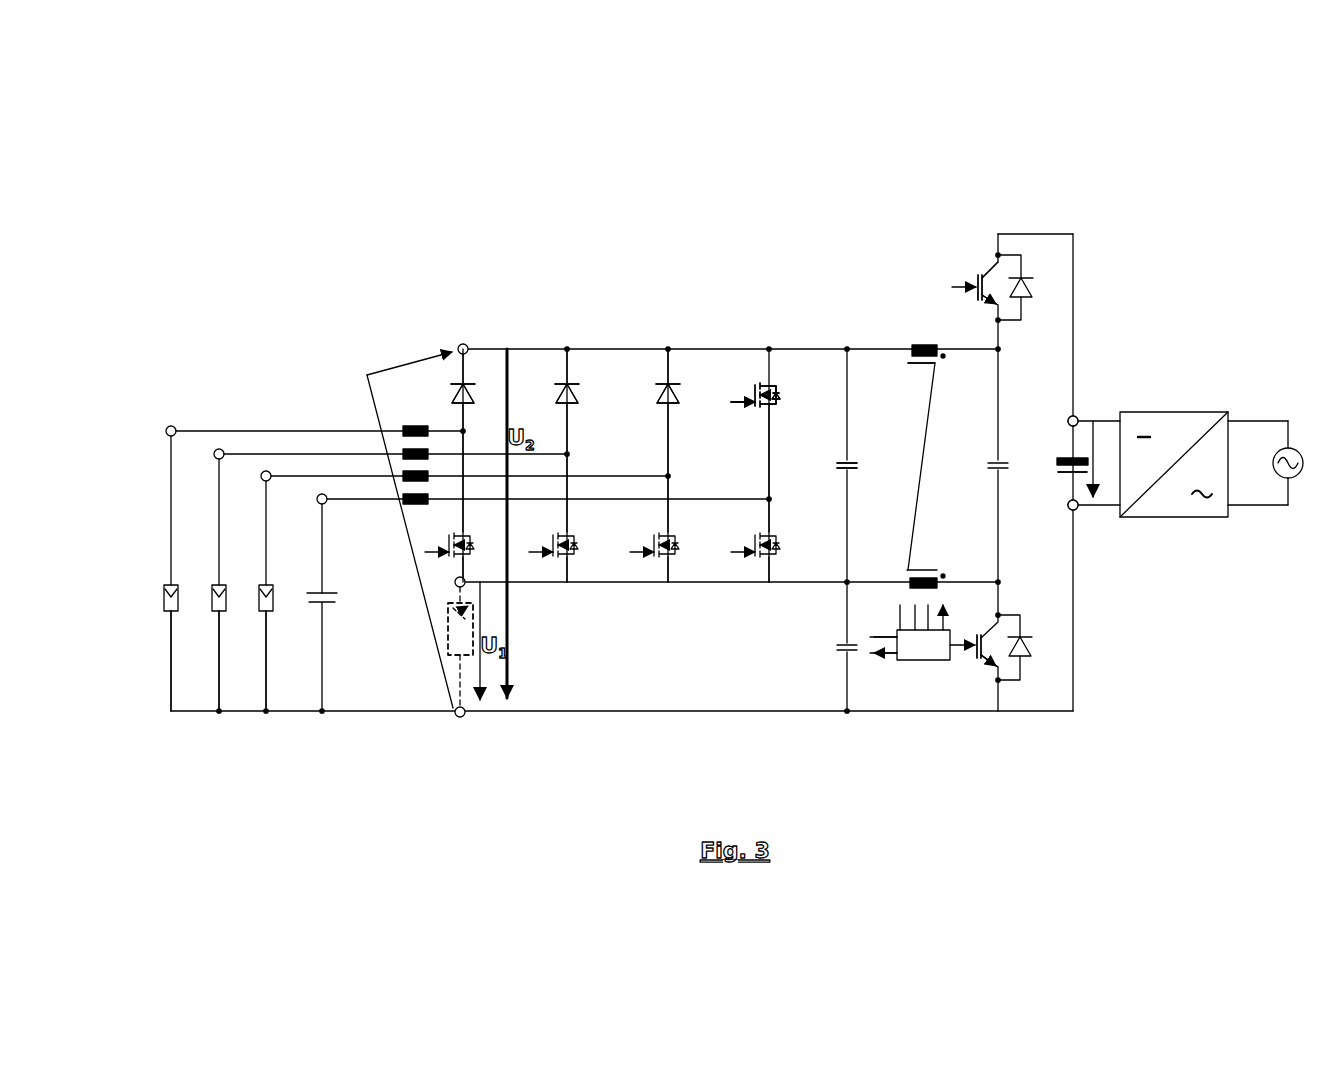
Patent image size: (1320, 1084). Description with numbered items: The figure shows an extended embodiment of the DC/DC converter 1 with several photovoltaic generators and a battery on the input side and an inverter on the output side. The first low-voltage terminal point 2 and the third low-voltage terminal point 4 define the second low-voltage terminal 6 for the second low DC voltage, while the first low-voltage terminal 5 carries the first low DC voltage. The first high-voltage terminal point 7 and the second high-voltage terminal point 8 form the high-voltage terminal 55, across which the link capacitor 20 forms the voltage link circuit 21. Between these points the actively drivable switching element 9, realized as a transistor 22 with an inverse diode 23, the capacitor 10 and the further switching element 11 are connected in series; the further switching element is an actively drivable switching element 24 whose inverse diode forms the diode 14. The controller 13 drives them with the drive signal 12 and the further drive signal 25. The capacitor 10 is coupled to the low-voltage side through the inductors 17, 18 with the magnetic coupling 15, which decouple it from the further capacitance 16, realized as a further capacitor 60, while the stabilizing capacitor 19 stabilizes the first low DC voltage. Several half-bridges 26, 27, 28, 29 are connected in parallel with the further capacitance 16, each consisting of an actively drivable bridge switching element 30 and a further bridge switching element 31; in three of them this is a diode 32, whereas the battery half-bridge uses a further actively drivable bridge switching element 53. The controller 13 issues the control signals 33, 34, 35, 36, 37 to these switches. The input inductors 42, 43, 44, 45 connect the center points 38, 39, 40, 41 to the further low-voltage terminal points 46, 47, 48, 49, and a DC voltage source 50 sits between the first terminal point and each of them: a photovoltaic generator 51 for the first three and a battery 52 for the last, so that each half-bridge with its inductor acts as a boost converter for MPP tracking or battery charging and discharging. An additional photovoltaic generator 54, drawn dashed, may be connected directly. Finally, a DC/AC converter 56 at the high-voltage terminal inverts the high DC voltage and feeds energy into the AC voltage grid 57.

The DC/DC converter 1 is at (828, 283).
The first low-voltage terminal point 2 is at (463, 718).
The third low-voltage terminal point 4 is at (459, 343).
The first low-voltage terminal 5 is at (450, 590).
The second low-voltage terminal 6 is at (398, 530).
The first high-voltage terminal point 7 is at (1077, 511).
The second high-voltage terminal point 8 is at (1078, 416).
The actively drivable switching element 9 is at (975, 670).
The capacitor 10 is at (1003, 460).
The further switching element 11 is at (975, 303).
The drive signal 12 is at (968, 657).
The controller 13 is at (920, 662).
The diode 14 is at (1034, 286).
The magnetic coupling 15 is at (914, 340).
The further capacitance 16 is at (858, 462).
The inductor 17 is at (910, 578).
The inductor 18 is at (935, 343).
The stabilizing capacitor 19 is at (843, 656).
The link capacitor 20 is at (1058, 454).
The voltage link circuit 21 is at (1058, 485).
The transistor 22 is at (985, 678).
The inverse diode 23 is at (1025, 660).
The actively drivable switching element 24 is at (984, 262).
The further drive signal 25 is at (965, 283).
The half-bridge 26 is at (463, 342).
The half-bridge 27 is at (567, 342).
The half-bridge 28 is at (668, 342).
The half-bridge 29 is at (769, 342).
The actively drivable bridge switching element 30 is at (447, 567).
The further bridge switching element 31 is at (478, 388).
The diode 32 is at (452, 393).
The control signal 33 is at (437, 551).
The control signal 34 is at (544, 552).
The control signal 35 is at (644, 552).
The control signal 36 is at (746, 552).
The control signal 37 is at (744, 405).
The center point 38 is at (461, 430).
The center point 39 is at (565, 452).
The center point 40 is at (665, 474).
The center point 41 is at (766, 497).
The input inductor 42 is at (405, 426).
The input inductor 43 is at (405, 452).
The input inductor 44 is at (405, 474).
The input inductor 45 is at (405, 497).
The further low-voltage terminal point 46 is at (168, 426).
The further low-voltage terminal point 47 is at (217, 449).
The further low-voltage terminal point 48 is at (264, 471).
The further low-voltage terminal point 49 is at (320, 494).
The DC voltage source 50 is at (164, 621).
The photovoltaic generator 51 is at (163, 588).
The battery 52 is at (333, 612).
The further actively drivable bridge switching element 53 is at (750, 375).
The additional photovoltaic generator 54 is at (452, 662).
The high-voltage terminal 55 is at (1079, 430).
The DC/AC converter 56 is at (1184, 409).
The AC voltage grid 57 is at (1296, 447).
The further capacitor 60 is at (847, 465).